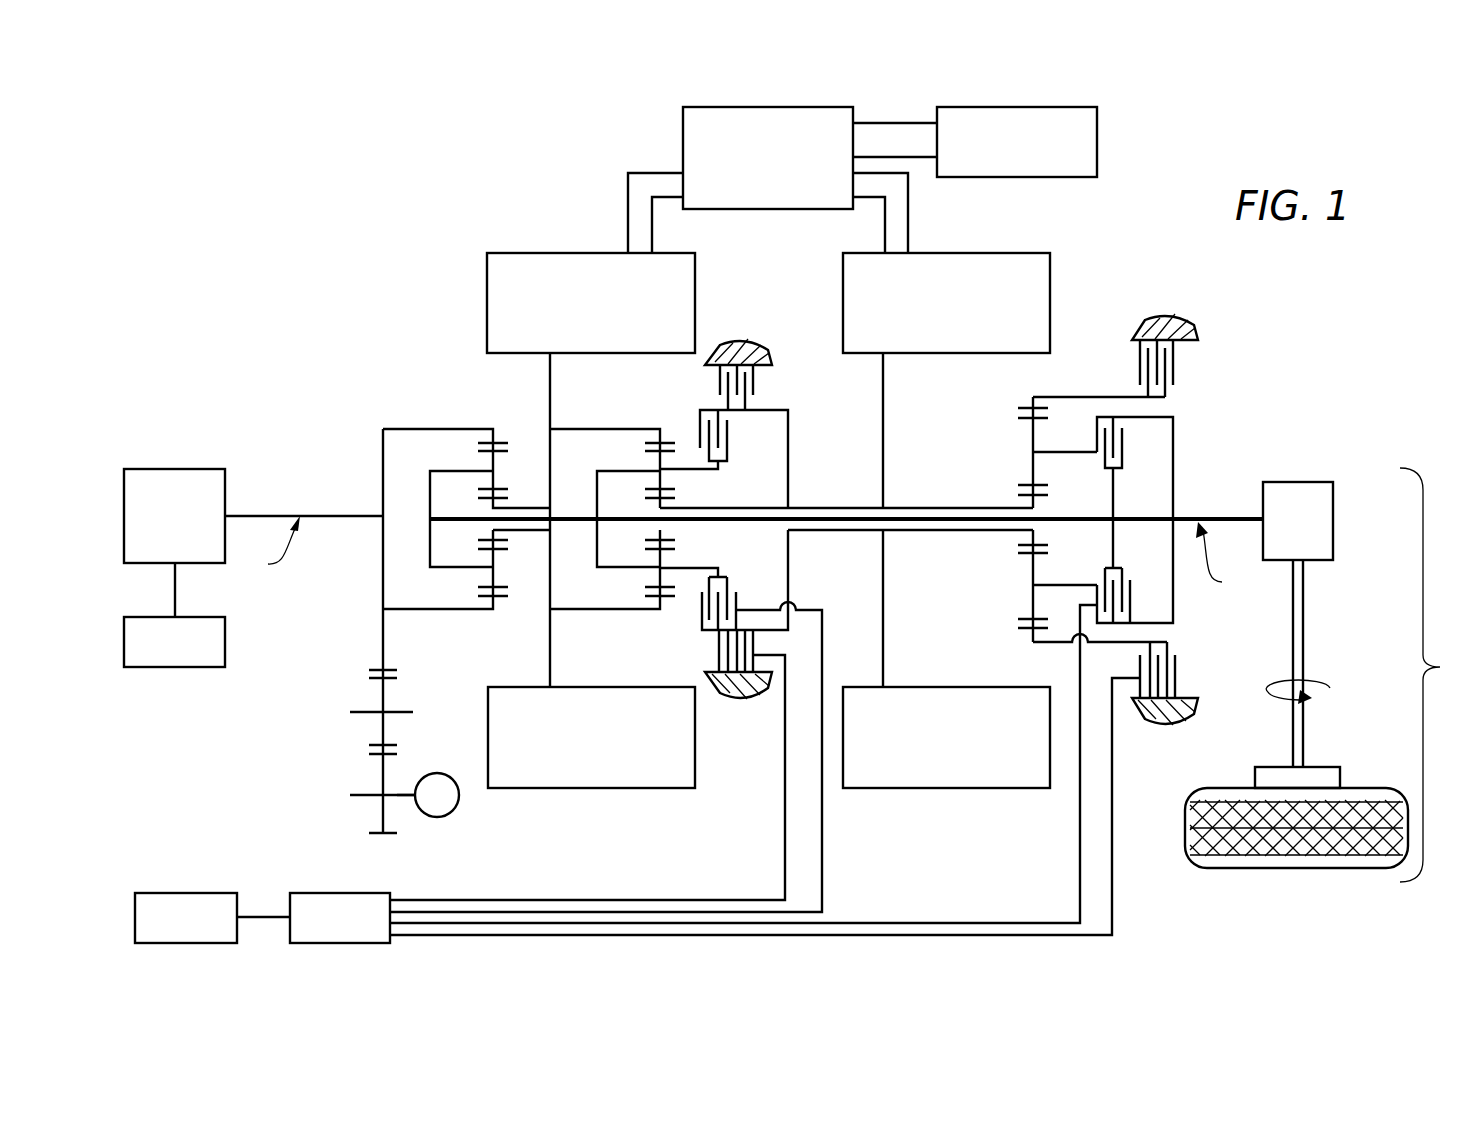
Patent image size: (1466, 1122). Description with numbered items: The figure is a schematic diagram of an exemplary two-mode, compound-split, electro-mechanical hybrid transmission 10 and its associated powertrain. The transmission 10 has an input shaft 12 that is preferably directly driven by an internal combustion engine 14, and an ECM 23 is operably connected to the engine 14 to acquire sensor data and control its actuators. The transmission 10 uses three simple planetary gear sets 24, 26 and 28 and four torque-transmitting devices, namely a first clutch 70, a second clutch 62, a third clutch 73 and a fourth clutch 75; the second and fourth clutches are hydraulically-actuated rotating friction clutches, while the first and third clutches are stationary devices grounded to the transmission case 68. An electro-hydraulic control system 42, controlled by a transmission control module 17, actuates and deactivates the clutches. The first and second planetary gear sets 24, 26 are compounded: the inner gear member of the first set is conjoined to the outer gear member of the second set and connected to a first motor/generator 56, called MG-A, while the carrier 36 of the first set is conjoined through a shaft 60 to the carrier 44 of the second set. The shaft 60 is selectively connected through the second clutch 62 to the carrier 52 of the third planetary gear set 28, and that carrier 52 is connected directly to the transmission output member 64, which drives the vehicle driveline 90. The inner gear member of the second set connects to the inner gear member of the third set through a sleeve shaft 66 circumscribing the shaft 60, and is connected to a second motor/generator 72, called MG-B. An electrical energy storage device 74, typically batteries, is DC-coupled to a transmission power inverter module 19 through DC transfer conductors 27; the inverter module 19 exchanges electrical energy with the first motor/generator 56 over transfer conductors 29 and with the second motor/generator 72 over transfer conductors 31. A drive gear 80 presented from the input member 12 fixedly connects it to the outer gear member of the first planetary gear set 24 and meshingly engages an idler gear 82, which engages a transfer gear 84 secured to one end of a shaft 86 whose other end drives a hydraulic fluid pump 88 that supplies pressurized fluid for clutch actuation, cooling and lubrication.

The transmission 10 is at (445, 208).
The input shaft 12 is at (341, 514).
The internal combustion engine 14 is at (180, 468).
The transmission control module 17 is at (175, 893).
The transmission power inverter module 19 is at (683, 125).
The ECM 23 is at (225, 660).
The first planetary gear set 24 is at (483, 418).
The second planetary gear set 26 is at (652, 418).
The DC transfer conductors 27 is at (872, 122).
The third planetary gear set 28 is at (1020, 393).
The transfer conductors 29 is at (628, 212).
The transfer conductors 31 is at (908, 207).
The carrier 36 is at (428, 545).
The electro-hydraulic control system 42 is at (308, 893).
The carrier 44 is at (597, 548).
The carrier 52 is at (1175, 427).
The motor/generator 56 is at (487, 292).
The shaft 60 is at (855, 516).
The clutch C2 62 is at (1150, 462).
The transmission output member 64 is at (1236, 516).
The sleeve shaft 66 is at (826, 506).
The transmission case 68 is at (742, 340).
The clutch C1 70 is at (1130, 375).
The motor/generator 72 is at (1050, 270).
The clutch C3 73 is at (760, 392).
The electrical energy storage device 74 is at (1097, 130).
The clutch C4 75 is at (740, 452).
The drive gear 80 is at (383, 570).
The idler gear 82 is at (380, 703).
The transfer gear 84 is at (380, 812).
The shaft 86 is at (402, 800).
The hydraulic/transmission fluid pump 88 is at (448, 815).
The vehicle driveline 90 is at (1325, 675).